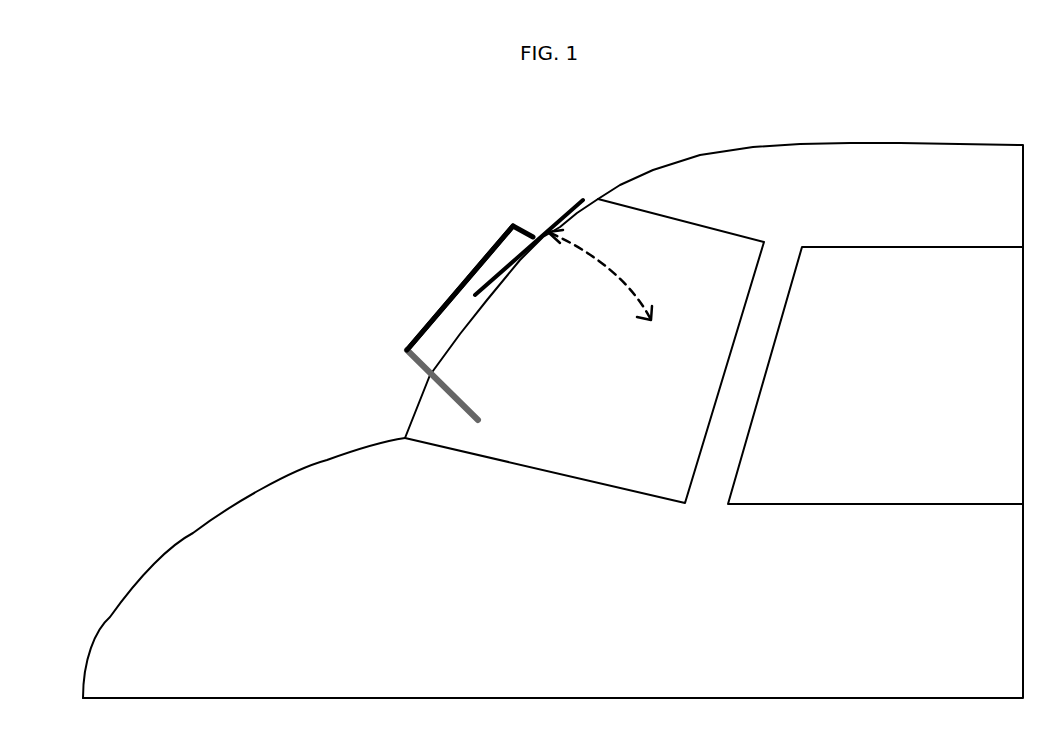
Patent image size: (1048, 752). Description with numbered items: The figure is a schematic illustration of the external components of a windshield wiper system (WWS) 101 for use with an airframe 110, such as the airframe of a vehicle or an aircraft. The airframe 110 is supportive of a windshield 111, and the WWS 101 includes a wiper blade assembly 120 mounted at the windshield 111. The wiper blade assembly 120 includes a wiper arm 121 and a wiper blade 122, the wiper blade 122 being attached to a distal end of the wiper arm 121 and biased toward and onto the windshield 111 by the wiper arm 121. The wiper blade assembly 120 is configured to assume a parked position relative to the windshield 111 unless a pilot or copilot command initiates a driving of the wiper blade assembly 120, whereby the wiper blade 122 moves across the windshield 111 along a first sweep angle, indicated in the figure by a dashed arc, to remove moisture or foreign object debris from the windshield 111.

The windshield wiper system 101 is at (392, 218).
The airframe 110 is at (652, 172).
The windshield 111 is at (417, 429).
The wiper blade assembly 120 is at (405, 351).
The wiper arm 121 is at (487, 258).
The wiper blade 122 is at (557, 218).